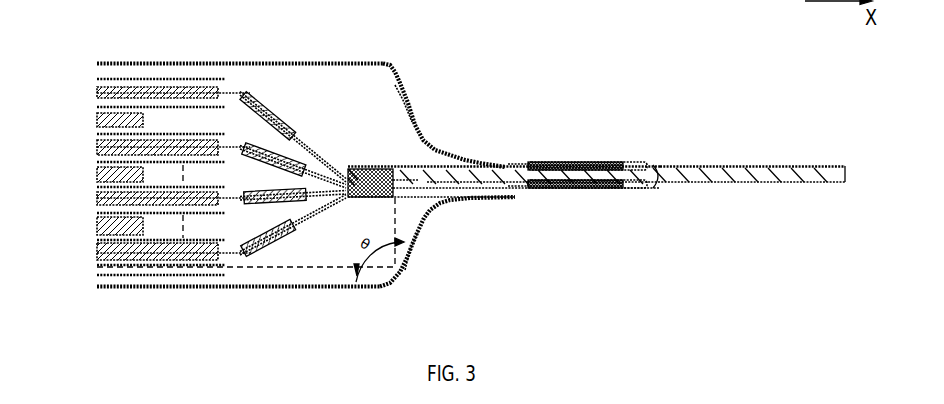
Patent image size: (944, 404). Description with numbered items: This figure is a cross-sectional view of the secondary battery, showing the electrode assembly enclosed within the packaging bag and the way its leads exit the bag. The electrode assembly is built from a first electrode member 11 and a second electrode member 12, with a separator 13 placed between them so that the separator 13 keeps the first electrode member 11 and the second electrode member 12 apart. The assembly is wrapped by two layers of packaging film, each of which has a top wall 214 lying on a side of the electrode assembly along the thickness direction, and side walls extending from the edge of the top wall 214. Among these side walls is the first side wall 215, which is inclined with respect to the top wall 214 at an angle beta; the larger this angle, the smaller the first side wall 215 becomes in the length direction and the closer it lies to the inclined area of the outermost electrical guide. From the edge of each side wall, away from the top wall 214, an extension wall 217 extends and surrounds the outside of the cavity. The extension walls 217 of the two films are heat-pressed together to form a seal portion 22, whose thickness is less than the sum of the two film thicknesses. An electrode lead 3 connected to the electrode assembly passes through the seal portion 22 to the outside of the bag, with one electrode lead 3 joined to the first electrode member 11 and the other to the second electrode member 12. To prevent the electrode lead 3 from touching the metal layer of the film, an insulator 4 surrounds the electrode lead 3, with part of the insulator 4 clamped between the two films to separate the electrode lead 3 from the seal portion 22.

The first electrode member 11 is at (100, 93).
The second electrode member 12 is at (98, 118).
The separator 13 is at (100, 107).
The top wall 214 is at (312, 62).
The first side wall 215 is at (418, 103).
The extension wall 217 is at (515, 162).
The seal portion 22 is at (583, 163).
The electrode lead 3 is at (743, 168).
The insulator 4 is at (655, 186).